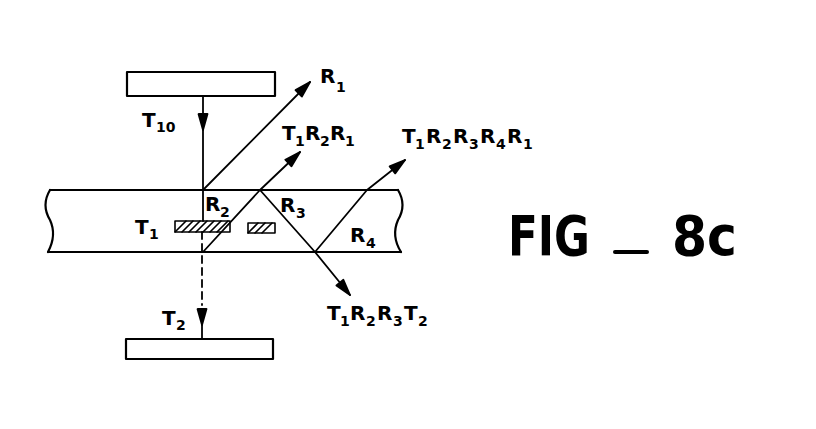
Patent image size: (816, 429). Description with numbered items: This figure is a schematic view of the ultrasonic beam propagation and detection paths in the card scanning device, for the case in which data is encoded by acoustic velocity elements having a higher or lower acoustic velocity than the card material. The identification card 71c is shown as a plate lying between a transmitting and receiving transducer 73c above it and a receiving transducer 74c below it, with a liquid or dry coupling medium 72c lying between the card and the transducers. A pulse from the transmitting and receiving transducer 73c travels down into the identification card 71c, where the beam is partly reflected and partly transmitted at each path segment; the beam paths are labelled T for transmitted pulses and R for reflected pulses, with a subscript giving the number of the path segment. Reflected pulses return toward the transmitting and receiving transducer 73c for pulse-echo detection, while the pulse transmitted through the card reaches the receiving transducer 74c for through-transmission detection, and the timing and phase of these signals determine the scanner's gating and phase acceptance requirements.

The identification card 71c is at (108, 202).
The coupling medium 72c is at (275, 310).
The transmitting and receiving transducer 73c is at (230, 83).
The receiving transducer 74c is at (152, 348).